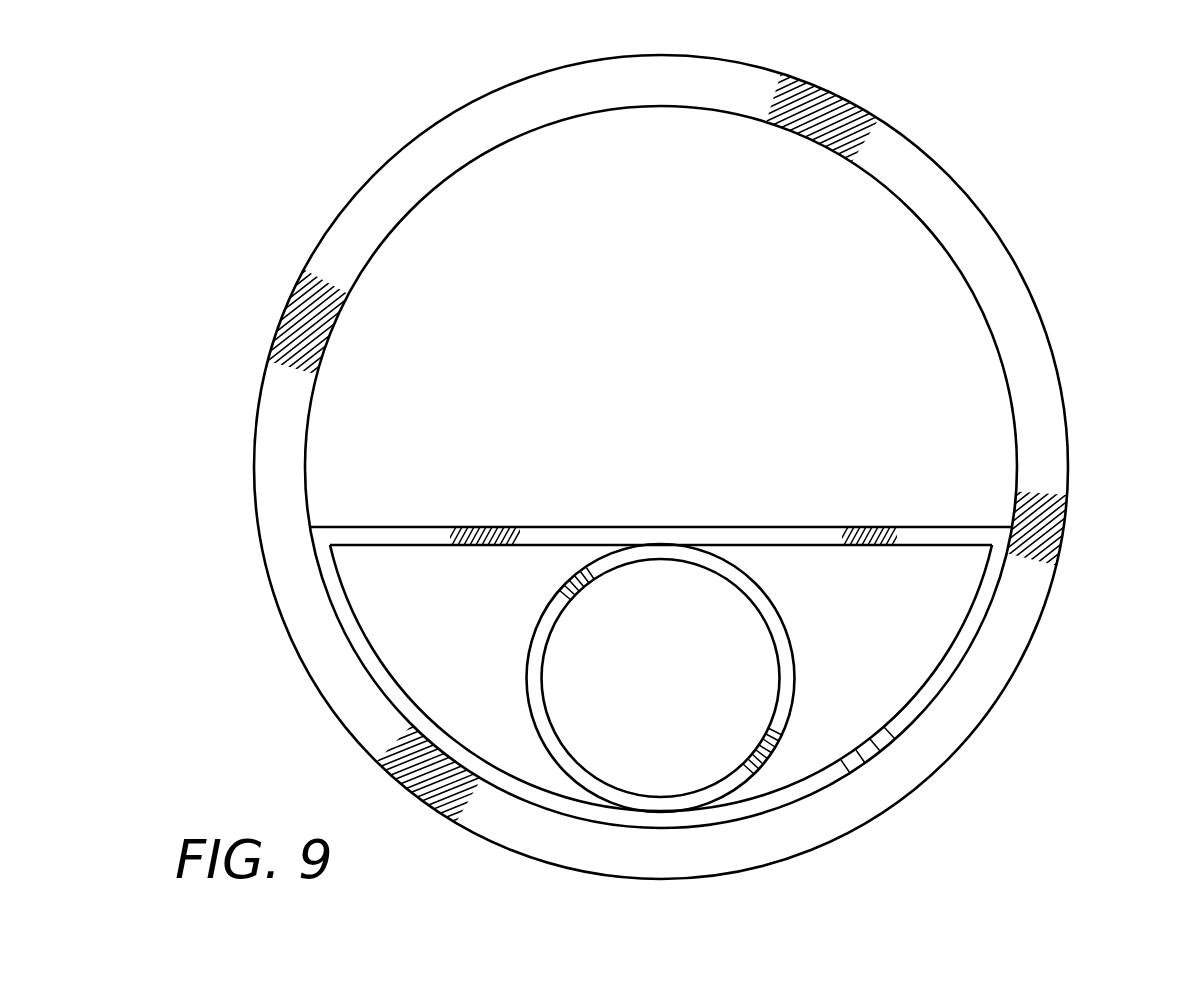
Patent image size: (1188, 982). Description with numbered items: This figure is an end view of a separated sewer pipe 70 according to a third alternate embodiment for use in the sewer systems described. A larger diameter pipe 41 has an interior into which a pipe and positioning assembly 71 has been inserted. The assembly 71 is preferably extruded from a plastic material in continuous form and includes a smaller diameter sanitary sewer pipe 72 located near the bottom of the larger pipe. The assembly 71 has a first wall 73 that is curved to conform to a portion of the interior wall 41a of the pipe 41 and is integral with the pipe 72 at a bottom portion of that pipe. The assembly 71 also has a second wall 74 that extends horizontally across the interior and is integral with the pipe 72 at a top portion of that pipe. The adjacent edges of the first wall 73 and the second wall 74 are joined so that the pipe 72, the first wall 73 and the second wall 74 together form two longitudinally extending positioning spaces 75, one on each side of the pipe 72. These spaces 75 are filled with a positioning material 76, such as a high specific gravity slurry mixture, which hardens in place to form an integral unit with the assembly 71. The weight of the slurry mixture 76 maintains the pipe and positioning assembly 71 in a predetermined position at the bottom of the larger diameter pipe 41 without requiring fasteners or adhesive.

The larger diameter pipe 41 is at (762, 95).
The interior wall 41a is at (314, 389).
The separated sewer pipe 70 is at (1074, 236).
The pipe and positioning assembly 71 is at (754, 498).
The smaller diameter sanitary sewer pipe 72 is at (785, 667).
The first wall 73 is at (913, 708).
The second wall 74 is at (817, 533).
The positioning spaces 75 is at (413, 685).
The positioning material 76 is at (472, 641).